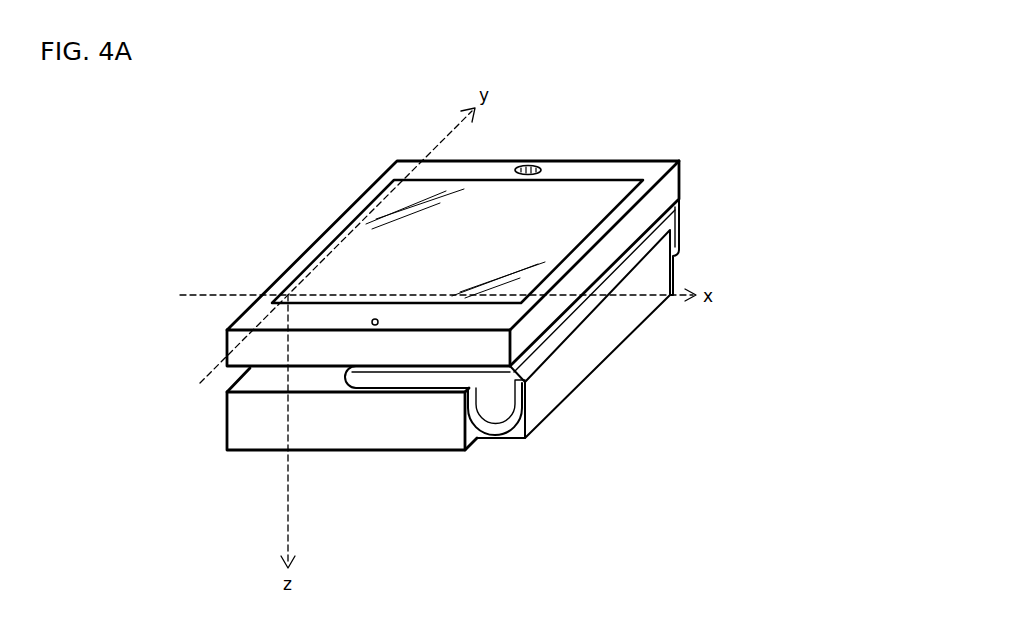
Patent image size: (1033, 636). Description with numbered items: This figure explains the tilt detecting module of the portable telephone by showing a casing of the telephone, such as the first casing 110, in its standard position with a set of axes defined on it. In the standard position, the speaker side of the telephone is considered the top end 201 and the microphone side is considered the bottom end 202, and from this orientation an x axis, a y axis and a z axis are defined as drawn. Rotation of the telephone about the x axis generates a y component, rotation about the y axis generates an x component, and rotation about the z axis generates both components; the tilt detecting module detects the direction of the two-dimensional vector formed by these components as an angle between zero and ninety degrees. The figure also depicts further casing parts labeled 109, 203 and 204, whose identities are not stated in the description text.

The operation button 109 is at (531, 165).
The first casing 110 is at (382, 324).
The top end 201 is at (648, 170).
The bottom end 202 is at (319, 355).
The display window 203 is at (346, 211).
The side frame rail 204 is at (643, 213).